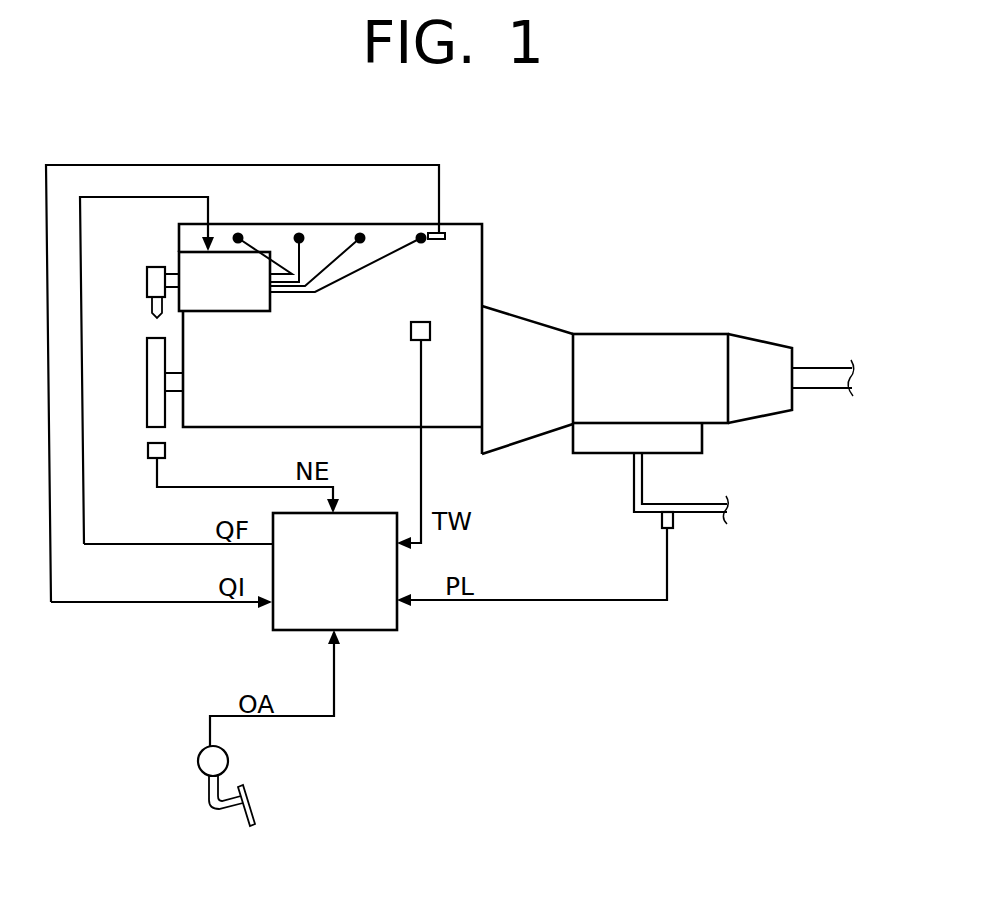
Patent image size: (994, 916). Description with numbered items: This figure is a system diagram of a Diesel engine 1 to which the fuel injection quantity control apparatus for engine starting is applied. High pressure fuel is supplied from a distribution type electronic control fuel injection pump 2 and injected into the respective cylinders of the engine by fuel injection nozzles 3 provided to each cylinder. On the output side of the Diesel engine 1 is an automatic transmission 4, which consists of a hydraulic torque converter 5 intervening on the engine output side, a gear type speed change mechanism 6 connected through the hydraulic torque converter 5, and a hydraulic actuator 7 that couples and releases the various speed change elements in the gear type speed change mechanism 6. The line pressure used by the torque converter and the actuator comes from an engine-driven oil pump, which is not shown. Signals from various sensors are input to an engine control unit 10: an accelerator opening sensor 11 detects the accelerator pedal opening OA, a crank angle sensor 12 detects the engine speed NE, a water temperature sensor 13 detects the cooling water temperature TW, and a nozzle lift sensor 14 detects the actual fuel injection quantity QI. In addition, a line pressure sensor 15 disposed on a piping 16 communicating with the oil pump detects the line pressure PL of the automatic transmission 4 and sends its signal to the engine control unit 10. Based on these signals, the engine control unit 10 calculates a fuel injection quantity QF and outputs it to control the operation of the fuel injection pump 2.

The Diesel engine 1 is at (520, 224).
The fuel injection pump 2 is at (228, 313).
The fuel injection nozzles 3 is at (240, 232).
The automatic transmission 4 is at (702, 309).
The hydraulic torque converter 5 is at (528, 327).
The gear type speed change mechanism 6 is at (651, 340).
The hydraulic actuator 7 is at (597, 448).
The engine control unit 10 is at (375, 631).
The accelerator opening sensor 11 is at (198, 760).
The crank angle sensor 12 is at (166, 451).
The water temperature sensor 13 is at (411, 330).
The nozzle lift sensor 14 is at (447, 233).
The line pressure sensor 15 is at (675, 530).
The piping 16 is at (716, 502).